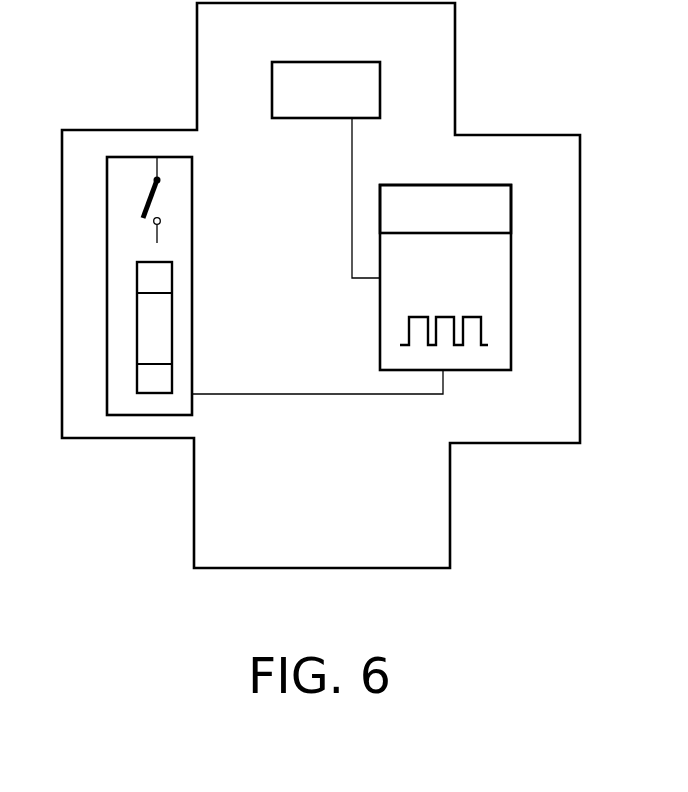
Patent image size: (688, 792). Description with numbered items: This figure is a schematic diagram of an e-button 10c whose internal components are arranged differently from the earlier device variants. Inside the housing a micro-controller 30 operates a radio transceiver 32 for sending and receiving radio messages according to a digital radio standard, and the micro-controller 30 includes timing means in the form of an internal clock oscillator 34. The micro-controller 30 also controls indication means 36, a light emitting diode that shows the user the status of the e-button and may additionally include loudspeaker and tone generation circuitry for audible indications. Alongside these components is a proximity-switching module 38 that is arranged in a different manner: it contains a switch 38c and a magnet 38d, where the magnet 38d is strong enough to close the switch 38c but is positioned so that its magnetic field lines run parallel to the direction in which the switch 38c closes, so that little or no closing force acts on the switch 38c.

The e-button 10c is at (455, 37).
The micro-controller 30 is at (511, 278).
The radio transceiver 32 is at (511, 212).
The internal clock oscillator 34 is at (483, 332).
The indication means 36 is at (380, 90).
The proximity-switching module 38 is at (192, 252).
The switch 38c is at (152, 200).
The magnet 38d is at (163, 333).